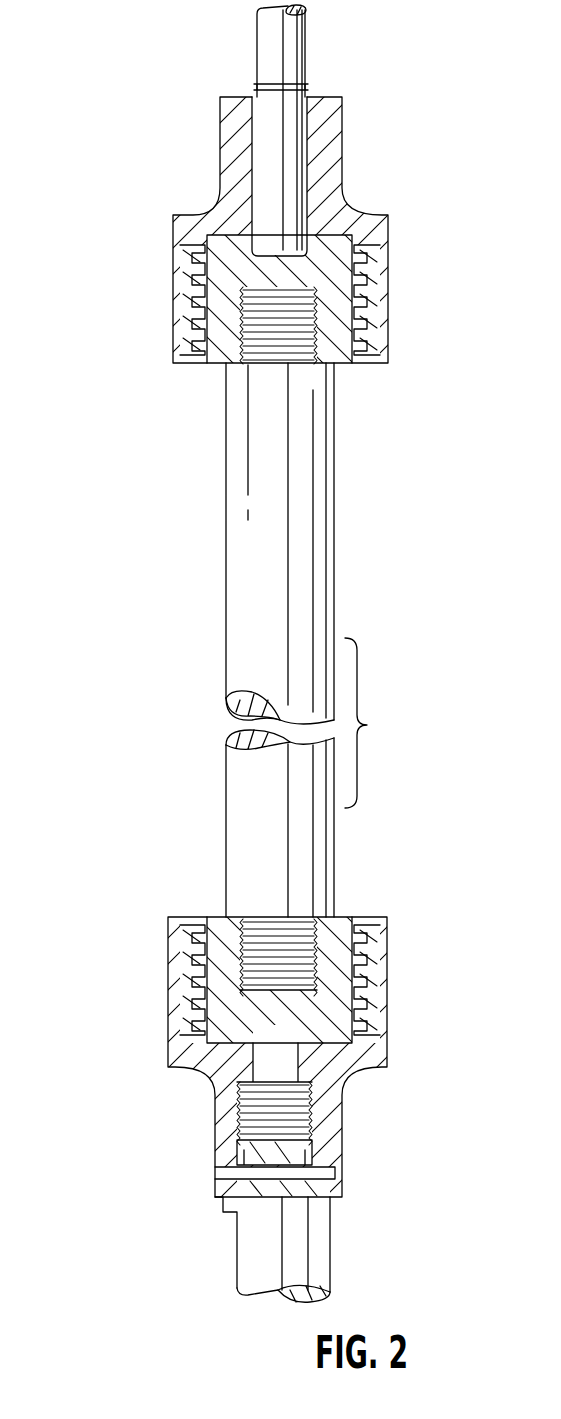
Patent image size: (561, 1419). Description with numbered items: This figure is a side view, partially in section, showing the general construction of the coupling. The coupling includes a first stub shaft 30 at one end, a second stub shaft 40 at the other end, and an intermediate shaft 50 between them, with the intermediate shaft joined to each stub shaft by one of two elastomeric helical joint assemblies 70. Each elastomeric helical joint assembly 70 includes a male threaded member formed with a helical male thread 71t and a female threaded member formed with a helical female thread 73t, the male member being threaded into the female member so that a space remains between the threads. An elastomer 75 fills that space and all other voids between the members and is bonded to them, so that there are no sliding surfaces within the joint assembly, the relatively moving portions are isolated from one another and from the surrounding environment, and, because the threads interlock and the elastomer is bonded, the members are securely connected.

The first stub shaft 30 is at (290, 48).
The second stub shaft 40 is at (320, 1248).
The intermediate shaft 50 is at (313, 485).
The elastomeric helical joint assembly 70 is at (172, 261).
The helical male thread 71t is at (208, 917).
The helical female thread 73t is at (372, 1010).
The elastomer 75 is at (376, 273).